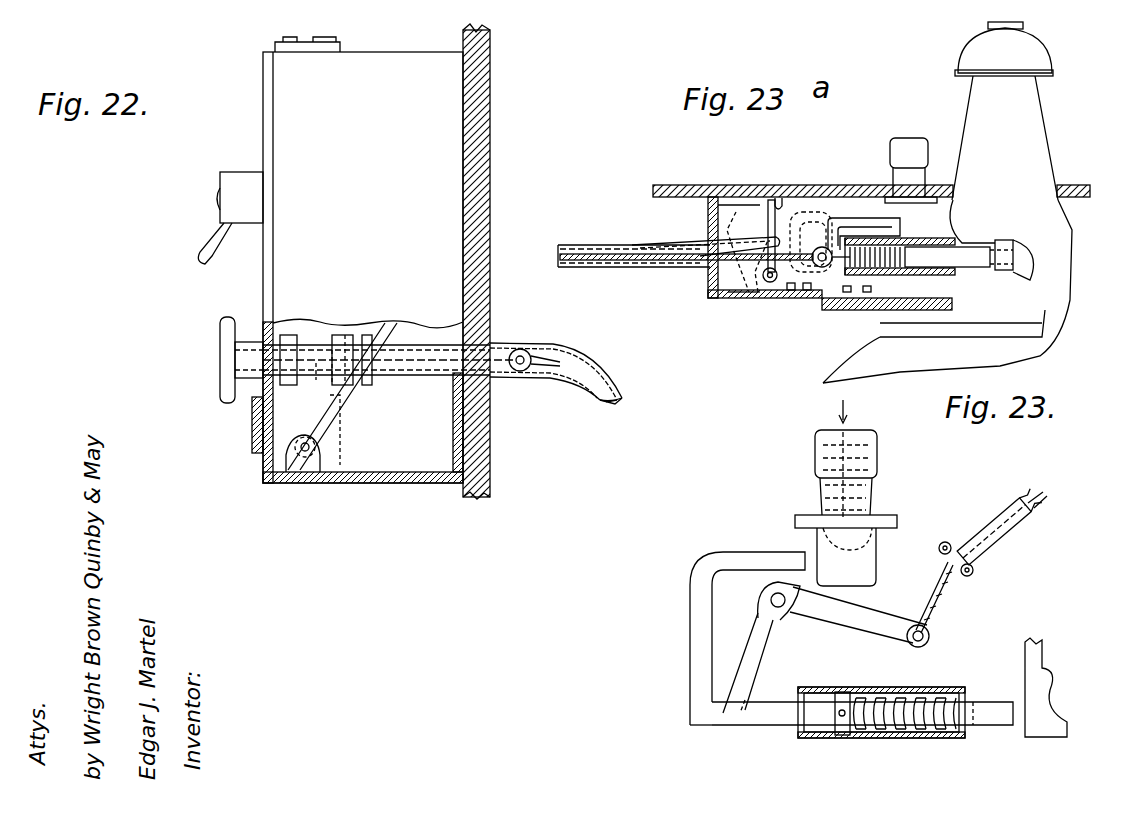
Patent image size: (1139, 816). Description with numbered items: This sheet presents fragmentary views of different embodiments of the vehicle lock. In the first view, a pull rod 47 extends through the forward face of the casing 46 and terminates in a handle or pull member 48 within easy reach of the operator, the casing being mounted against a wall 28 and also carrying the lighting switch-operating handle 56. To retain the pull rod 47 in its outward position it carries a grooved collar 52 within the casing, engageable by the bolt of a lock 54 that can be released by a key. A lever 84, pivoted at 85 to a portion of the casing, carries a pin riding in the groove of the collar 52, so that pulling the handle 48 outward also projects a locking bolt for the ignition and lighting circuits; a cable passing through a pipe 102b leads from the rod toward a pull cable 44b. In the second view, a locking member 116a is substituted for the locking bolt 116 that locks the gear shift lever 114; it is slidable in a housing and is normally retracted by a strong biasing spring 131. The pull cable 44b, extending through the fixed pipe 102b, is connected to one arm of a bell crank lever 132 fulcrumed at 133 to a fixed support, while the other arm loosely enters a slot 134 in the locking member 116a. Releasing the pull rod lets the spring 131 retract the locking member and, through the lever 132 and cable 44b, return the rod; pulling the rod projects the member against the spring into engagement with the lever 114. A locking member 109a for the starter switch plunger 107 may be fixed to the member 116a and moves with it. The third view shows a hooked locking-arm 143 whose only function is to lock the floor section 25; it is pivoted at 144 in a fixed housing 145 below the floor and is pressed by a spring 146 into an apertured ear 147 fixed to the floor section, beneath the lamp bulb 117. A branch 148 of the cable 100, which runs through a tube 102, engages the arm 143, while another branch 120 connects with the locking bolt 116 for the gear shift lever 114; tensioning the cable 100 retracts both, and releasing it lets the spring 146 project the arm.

In FIG. 22, the wall 28 is at (470, 150).
In FIG. 22, the casing 46 is at (275, 118).
In FIG. 22, the lighting switch-operating handle 56 is at (208, 244).
In FIG. 22, the handle or pull member 48 is at (225, 360).
In FIG. 22, the pull rod 47 is at (428, 358).
In FIG. 22, the grooved collar 52 is at (367, 390).
In FIG. 22, the lever 84 is at (340, 397).
In FIG. 22, the pivot 85 is at (308, 452).
In FIG. 22, the lock 54 is at (288, 415).
In FIG. 22, the fixed pipe 102b is at (590, 352).
In FIG. 23, the fixed pipe 102b is at (1000, 530).
In FIG. 22, the pull cable 44b is at (620, 397).
In FIG. 23, the pull cable 44b is at (1047, 492).
In FIG. 23A, the bulb 117 is at (947, 202).
In FIG. 23A, the locking member 109a is at (835, 228).
In FIG. 23, the locking member 109a is at (697, 620).
In FIG. 23A, the push button 107 is at (900, 152).
In FIG. 23, the push button 107 is at (825, 452).
In FIG. 23A, the tube 102 is at (587, 247).
In FIG. 23A, the cable 100 is at (622, 260).
In FIG. 23A, the branch of the cable 148 is at (705, 248).
In FIG. 23A, the hooked locking-arm 143 is at (768, 222).
In FIG. 23A, the apertured ear 147 is at (779, 198).
In FIG. 23A, the floor section 25 is at (832, 220).
In FIG. 23A, the fixed housing 145 is at (826, 300).
In FIG. 23A, the branch of the cable 120 is at (740, 252).
In FIG. 23A, the spring 146 is at (757, 292).
In FIG. 23A, the pivot 144 is at (773, 282).
In FIG. 23A, the locking bolt 116 is at (972, 260).
In FIG. 23A, the gear shift lever 114 is at (1020, 250).
In FIG. 23, the gear shift lever 114 is at (1040, 672).
In FIG. 23, the fulcrum 133 is at (780, 606).
In FIG. 23, the bell crank lever 132 is at (845, 612).
In FIG. 23, the slot 134 is at (738, 715).
In FIG. 23, the locking member 116a is at (985, 718).
In FIG. 23, the biasing spring 131 is at (908, 725).